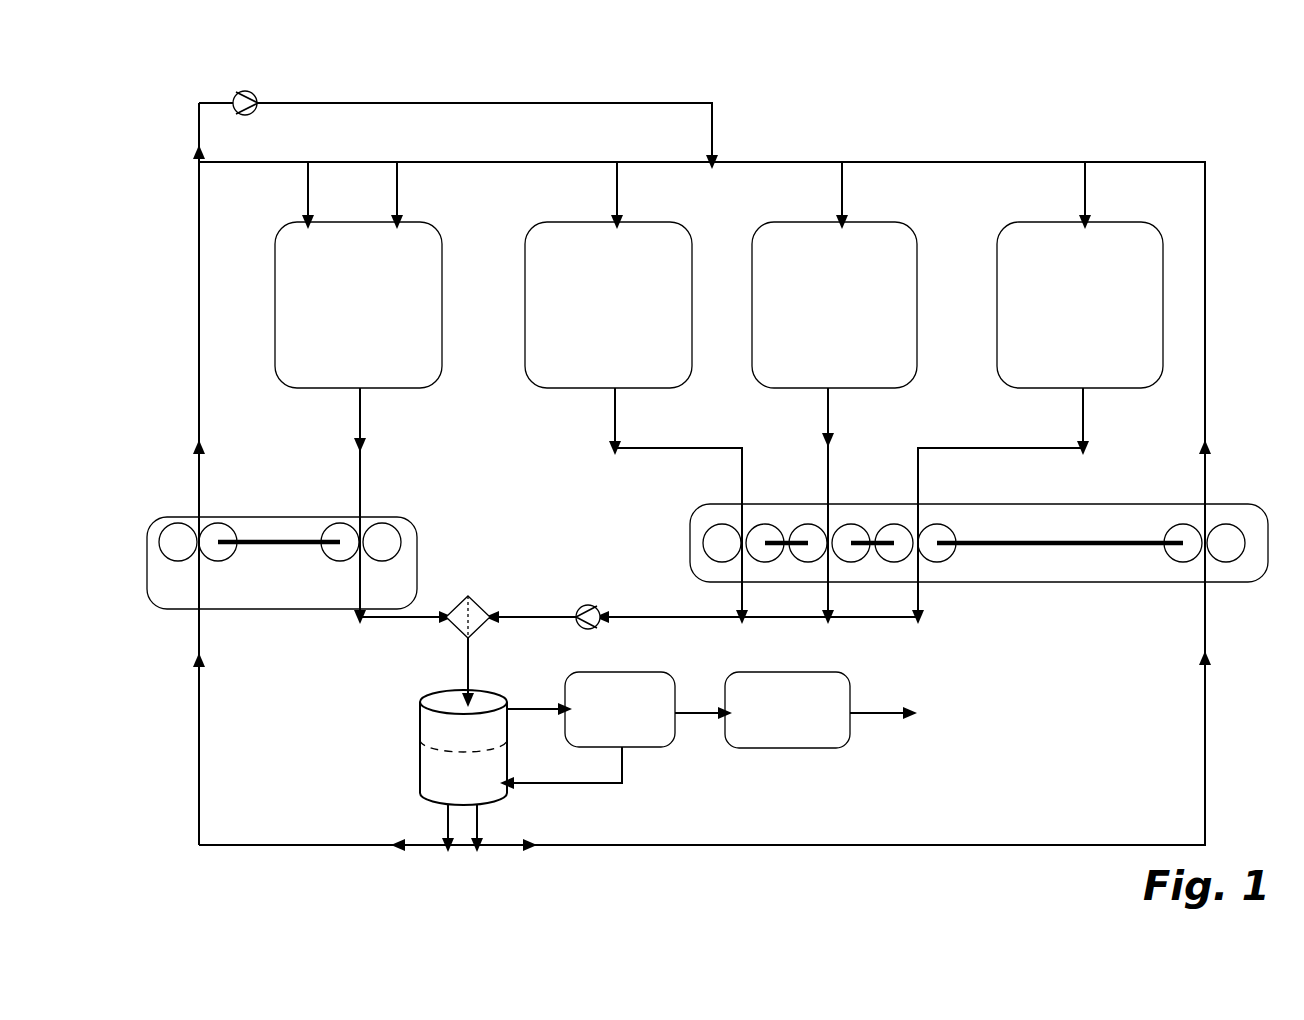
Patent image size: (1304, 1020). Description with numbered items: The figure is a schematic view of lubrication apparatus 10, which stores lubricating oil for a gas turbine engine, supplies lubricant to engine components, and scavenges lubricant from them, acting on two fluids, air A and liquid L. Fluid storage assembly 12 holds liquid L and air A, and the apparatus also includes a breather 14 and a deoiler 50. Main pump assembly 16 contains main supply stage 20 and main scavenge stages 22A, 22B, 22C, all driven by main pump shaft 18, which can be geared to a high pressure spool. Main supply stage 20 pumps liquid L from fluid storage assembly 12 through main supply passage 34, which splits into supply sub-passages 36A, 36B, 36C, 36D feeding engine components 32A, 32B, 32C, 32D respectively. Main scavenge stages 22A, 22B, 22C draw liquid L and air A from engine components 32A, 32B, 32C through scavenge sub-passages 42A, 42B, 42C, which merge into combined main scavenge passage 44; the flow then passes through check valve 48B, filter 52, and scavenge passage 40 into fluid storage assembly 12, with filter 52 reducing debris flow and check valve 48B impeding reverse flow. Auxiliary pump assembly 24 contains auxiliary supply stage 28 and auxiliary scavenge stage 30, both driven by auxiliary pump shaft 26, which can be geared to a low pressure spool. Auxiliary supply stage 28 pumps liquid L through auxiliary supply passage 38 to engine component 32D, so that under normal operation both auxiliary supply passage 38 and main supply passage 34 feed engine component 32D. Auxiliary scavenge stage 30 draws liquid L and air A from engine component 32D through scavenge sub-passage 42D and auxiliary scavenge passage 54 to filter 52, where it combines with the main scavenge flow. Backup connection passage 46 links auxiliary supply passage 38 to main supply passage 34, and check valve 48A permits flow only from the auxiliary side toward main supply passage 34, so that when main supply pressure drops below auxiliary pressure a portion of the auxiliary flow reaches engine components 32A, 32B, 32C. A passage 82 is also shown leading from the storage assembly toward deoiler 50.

The lubrication apparatus 10 is at (1040, 106).
The fluid storage assembly 12 is at (414, 790).
The breather 14 is at (852, 688).
The main pump assembly 16 is at (988, 551).
The main pump shaft 18 is at (1062, 542).
The main supply stage 20 is at (1228, 524).
The main scavenge stage 22A is at (945, 526).
The main scavenge stage 22B is at (852, 526).
The main scavenge stage 22C is at (760, 526).
The auxiliary pump assembly 24 is at (272, 568).
The auxiliary pump shaft 26 is at (260, 540).
The auxiliary supply stage 28 is at (175, 522).
The auxiliary scavenge stage 30 is at (382, 528).
The engine component 32A is at (1130, 224).
The engine component 32B is at (915, 228).
The engine component 32C is at (688, 228).
The engine component 32D is at (430, 226).
The main supply passage 34 is at (1207, 322).
The supply sub-passage 36A is at (1084, 186).
The supply sub-passage 36B is at (841, 186).
The supply sub-passage 36C is at (616, 182).
The supply sub-passage 36D is at (396, 186).
The auxiliary supply passage 38 is at (212, 164).
The scavenge passage 40 is at (466, 668).
The scavenge sub-passage 42A is at (1000, 446).
The scavenge sub-passage 42B is at (826, 460).
The scavenge sub-passage 42C is at (738, 447).
The scavenge sub-passage 42D is at (358, 470).
The combined main scavenge passage 44 is at (622, 616).
The backup connection passage 46 is at (410, 102).
The check valve 48A is at (232, 96).
The check valve 48B is at (590, 604).
The deoiler 50 is at (634, 672).
The filter 52 is at (477, 600).
The auxiliary scavenge passage 54 is at (372, 624).
The vent conduit 82 is at (520, 706).
The air A is at (432, 716).
The liquid L is at (436, 758).